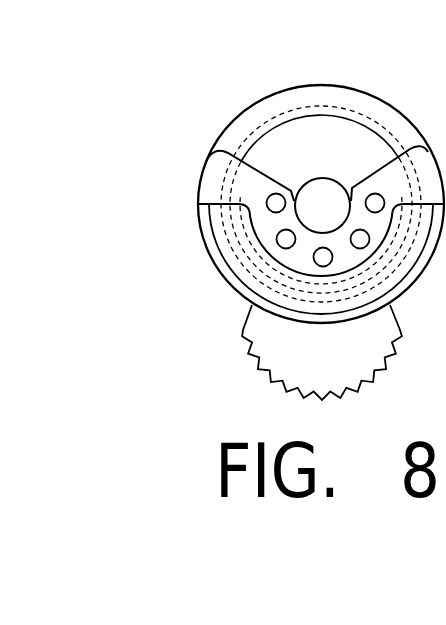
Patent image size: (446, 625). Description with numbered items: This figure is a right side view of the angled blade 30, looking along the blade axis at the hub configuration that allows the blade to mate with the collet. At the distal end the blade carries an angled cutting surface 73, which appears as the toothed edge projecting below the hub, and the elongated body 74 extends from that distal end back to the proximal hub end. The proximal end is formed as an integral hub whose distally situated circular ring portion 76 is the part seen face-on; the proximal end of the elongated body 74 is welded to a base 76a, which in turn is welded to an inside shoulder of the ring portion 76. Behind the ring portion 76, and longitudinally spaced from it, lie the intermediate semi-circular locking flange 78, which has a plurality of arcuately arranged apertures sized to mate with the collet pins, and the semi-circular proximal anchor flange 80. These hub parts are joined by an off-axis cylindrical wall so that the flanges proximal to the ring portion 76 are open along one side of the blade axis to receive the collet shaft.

The blade 30 is at (261, 73).
The angled cutting surface 73 is at (338, 360).
The elongated body 74 is at (312, 197).
The circular ring portion 76 is at (243, 122).
The base 76a is at (360, 136).
The intermediate semi-circular locking flange 78 is at (240, 170).
The semi-circular proximal anchor flange 80 is at (213, 218).